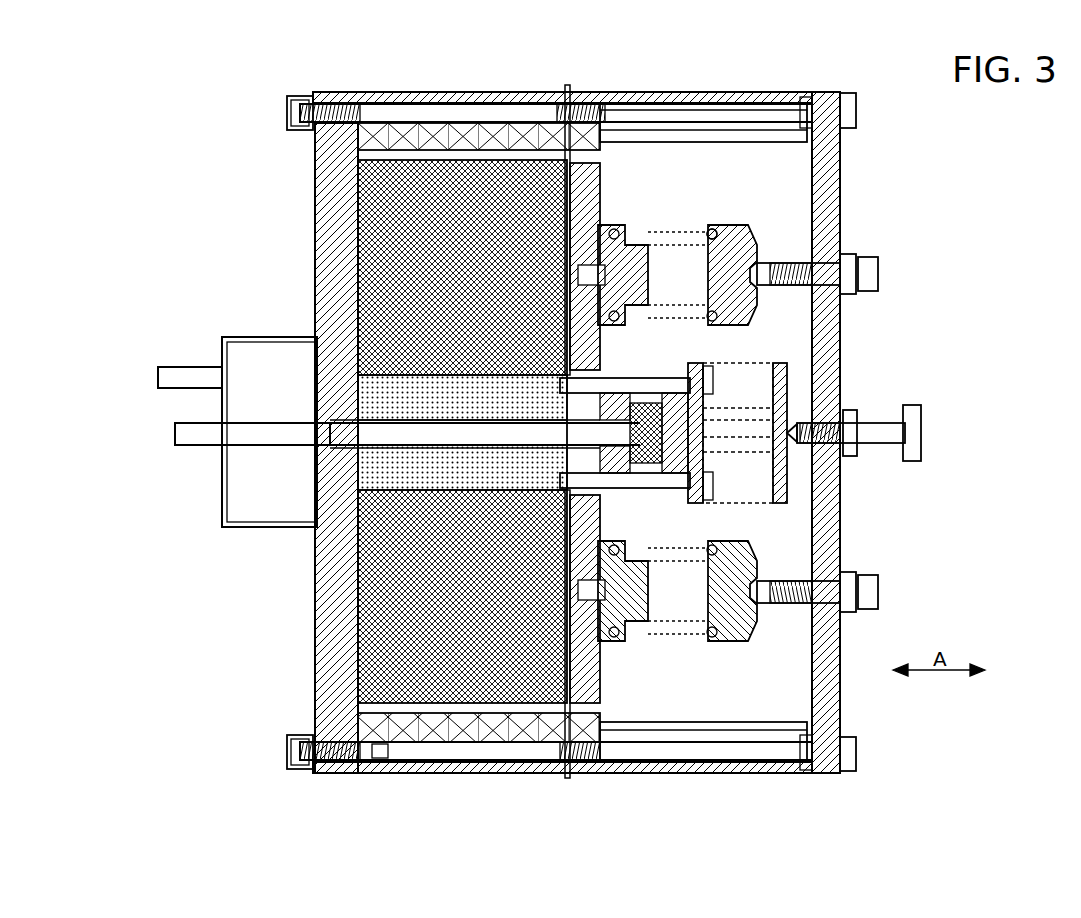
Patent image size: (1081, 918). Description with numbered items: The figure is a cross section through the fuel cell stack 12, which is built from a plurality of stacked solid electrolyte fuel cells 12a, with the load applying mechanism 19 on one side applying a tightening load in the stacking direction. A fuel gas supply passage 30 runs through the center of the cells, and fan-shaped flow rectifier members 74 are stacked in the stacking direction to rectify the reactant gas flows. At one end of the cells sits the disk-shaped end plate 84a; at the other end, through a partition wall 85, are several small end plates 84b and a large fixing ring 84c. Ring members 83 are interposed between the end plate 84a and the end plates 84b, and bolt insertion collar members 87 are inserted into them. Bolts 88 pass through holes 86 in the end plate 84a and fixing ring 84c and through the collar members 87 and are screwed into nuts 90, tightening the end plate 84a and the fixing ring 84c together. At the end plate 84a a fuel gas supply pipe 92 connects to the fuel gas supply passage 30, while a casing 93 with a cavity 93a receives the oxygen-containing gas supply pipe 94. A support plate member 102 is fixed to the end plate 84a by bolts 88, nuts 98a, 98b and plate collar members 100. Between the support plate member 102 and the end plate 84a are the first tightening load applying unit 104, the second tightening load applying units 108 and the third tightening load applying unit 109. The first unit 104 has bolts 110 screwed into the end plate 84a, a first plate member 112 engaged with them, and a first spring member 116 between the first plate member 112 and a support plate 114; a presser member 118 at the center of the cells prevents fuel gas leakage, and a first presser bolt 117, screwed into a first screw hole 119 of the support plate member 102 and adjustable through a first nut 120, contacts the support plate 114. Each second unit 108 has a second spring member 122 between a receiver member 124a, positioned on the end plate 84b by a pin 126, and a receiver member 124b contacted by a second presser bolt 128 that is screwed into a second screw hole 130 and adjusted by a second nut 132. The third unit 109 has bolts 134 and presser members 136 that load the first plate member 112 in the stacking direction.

The fuel cell stack 12 is at (876, 67).
The fuel cell 12a is at (560, 108).
The load applying mechanism 19 is at (836, 213).
The fuel gas supply passage 30 is at (345, 449).
The flow rectifier member 74 is at (356, 626).
The ring member 83 is at (506, 95).
The end plate 84a is at (330, 94).
The end plate 84b is at (600, 194).
The fixing ring 84c is at (592, 100).
The partition wall 85 is at (578, 698).
The hole 86 is at (288, 750).
The bolt insertion collar member 87 is at (378, 770).
The bolt 88 is at (462, 774).
The nut 90 is at (310, 738).
The fuel gas supply pipe 92 is at (263, 422).
The casing 93 is at (238, 528).
The cavity 93a is at (250, 360).
The oxygen-containing gas supply pipe 94 is at (192, 366).
The nut 98a is at (792, 753).
The nut 98b is at (606, 766).
The plate collar member 100 is at (694, 721).
The support plate member 102 is at (841, 360).
The first tightening load applying unit 104 is at (728, 364).
The second tightening load applying unit 108 is at (742, 645).
The third tightening load applying unit 109 is at (790, 408).
The bolt 110 is at (648, 398).
The first plate member 112 is at (698, 490).
The support plate 114 is at (781, 505).
The first spring member 116 is at (684, 392).
The first presser bolt 117 is at (800, 448).
The presser member 118 is at (622, 384).
The first screw hole 119 is at (860, 414).
The first nut 120 is at (848, 456).
The second spring member 122 is at (714, 230).
The receiver member 124a is at (624, 232).
The receiver member 124b is at (748, 228).
The pin 126 is at (652, 275).
The second presser bolt 128 is at (762, 290).
The second screw hole 130 is at (798, 266).
The second nut 132 is at (846, 262).
The bolt 134 is at (738, 455).
The presser member 136 is at (732, 418).